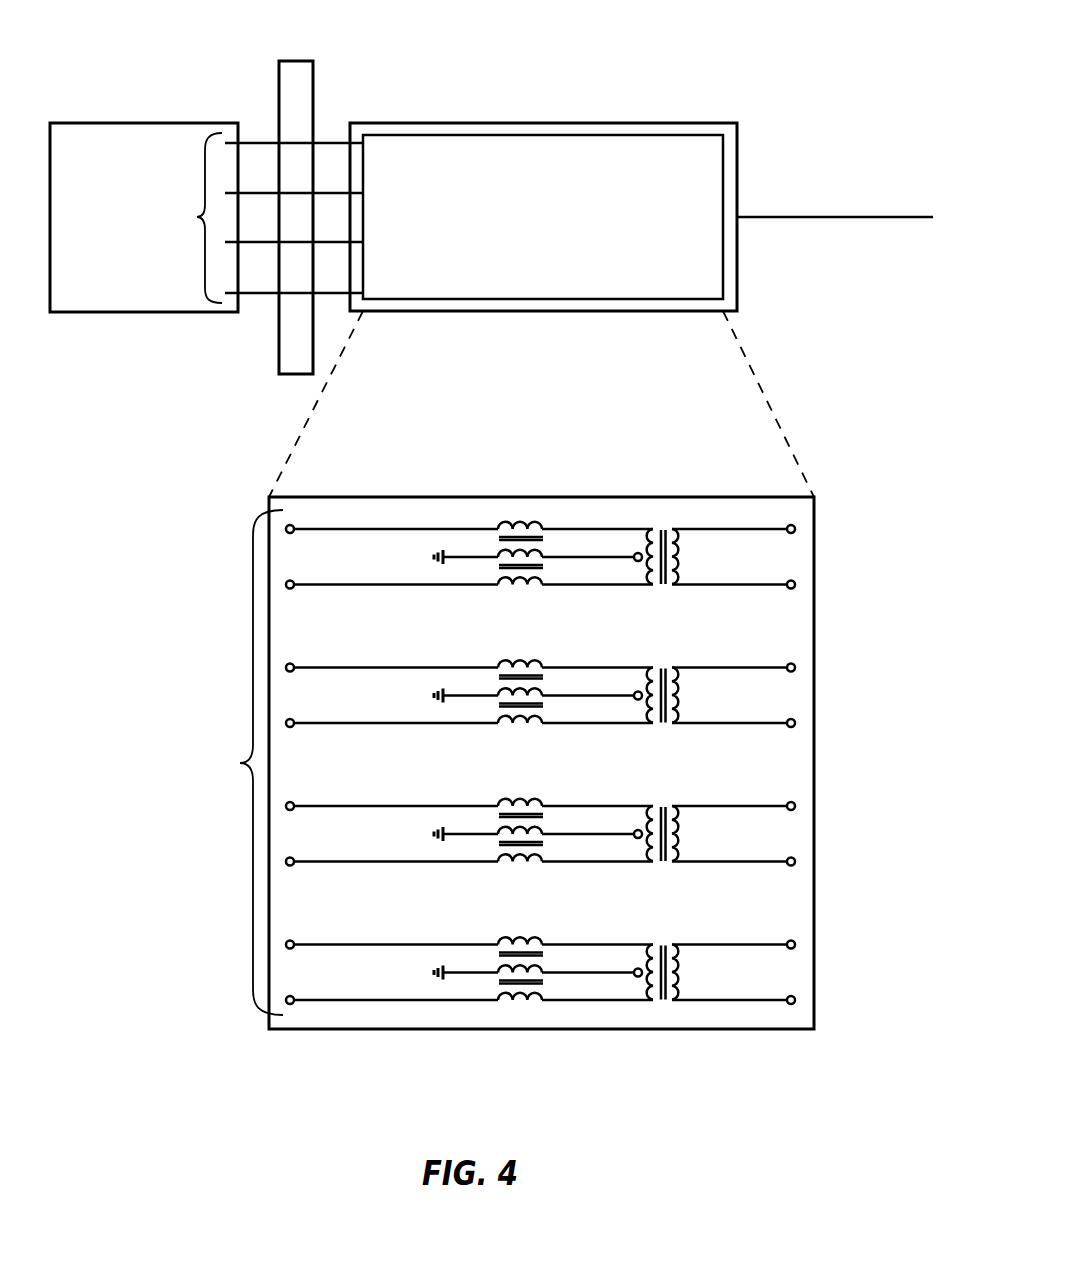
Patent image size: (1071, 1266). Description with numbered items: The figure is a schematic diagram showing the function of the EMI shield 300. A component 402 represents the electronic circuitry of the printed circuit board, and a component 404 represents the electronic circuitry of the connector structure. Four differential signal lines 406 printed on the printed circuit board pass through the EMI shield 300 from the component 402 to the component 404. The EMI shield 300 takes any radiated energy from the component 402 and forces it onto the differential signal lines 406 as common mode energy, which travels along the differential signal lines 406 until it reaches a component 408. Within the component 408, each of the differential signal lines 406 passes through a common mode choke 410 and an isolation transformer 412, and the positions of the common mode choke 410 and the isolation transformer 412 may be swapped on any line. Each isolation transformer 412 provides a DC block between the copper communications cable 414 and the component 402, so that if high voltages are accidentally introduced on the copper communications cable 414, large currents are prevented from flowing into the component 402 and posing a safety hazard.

The EMI shield 300 is at (296, 61).
The component 402 is at (137, 122).
The component 404 is at (643, 122).
The differential signal lines 406 is at (196, 218).
The component 408 is at (517, 148).
The common mode choke 410 is at (520, 661).
The isolation transformer 412 is at (663, 664).
The copper communications cable 414 is at (828, 217).